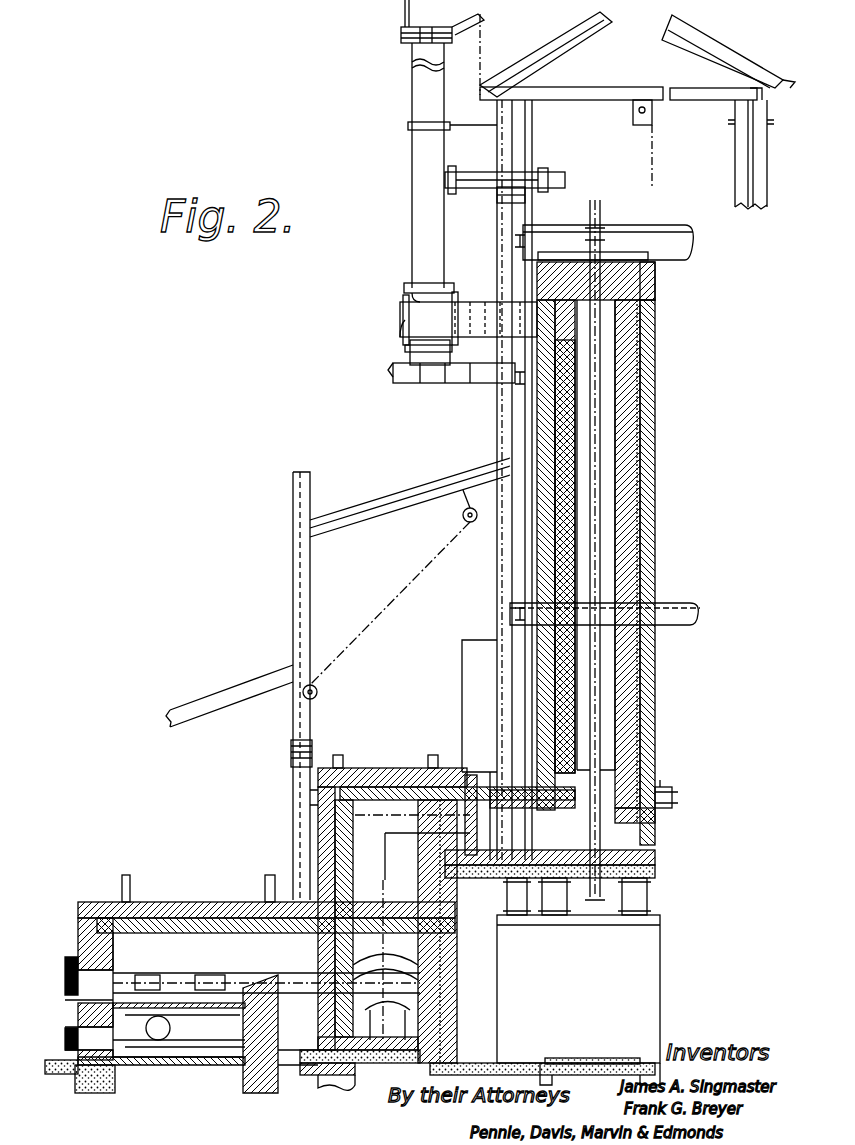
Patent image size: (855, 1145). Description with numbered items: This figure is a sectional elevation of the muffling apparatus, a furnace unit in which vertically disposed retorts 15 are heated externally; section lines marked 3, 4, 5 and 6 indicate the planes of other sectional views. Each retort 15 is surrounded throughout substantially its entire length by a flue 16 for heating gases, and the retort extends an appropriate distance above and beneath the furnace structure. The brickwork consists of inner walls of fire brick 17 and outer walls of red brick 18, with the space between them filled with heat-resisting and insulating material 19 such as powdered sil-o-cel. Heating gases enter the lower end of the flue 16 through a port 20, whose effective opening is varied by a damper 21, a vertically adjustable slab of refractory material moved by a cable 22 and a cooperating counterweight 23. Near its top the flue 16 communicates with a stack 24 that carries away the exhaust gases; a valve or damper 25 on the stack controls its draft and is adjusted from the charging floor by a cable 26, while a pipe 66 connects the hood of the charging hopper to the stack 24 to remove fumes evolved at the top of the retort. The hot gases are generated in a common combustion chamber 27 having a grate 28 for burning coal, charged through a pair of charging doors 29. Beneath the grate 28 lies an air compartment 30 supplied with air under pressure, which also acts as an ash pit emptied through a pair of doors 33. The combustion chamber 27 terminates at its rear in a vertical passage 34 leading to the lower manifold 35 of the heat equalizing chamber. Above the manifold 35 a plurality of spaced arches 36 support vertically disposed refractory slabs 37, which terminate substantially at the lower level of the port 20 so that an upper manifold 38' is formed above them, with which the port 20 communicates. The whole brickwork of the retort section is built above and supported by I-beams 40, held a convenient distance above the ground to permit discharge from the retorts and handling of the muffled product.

The retort 15 is at (600, 385).
The flue 16 is at (610, 500).
The fire brick inner wall 17 is at (625, 560).
The red brick outer wall 18 is at (656, 308).
The heat-resisting and insulating material 19 is at (640, 432).
The port 20 is at (492, 772).
The damper 21 is at (458, 772).
The cable 22 is at (383, 600).
The counterweight 23 is at (293, 752).
The stack 24 is at (412, 150).
The stack damper 25 is at (401, 38).
The cable 26 is at (653, 147).
The combustion chamber 27 is at (175, 960).
The grate 28 is at (218, 1010).
The charging door 29 is at (78, 977).
The air compartment 30 is at (210, 1042).
The ash door 33 is at (72, 1033).
The vertical passage 34 is at (315, 1055).
The lower manifold 35 is at (405, 990).
The arch 36 is at (405, 963).
The refractory slab 37 is at (405, 930).
The upper manifold 38' is at (446, 878).
The I-beam 40 is at (626, 900).
The fume pipe 66 is at (552, 172).
The section line 3 is at (490, 835).
The section line 4 is at (490, 640).
The section line 5 is at (593, 230).
The section line 6 is at (513, 217).